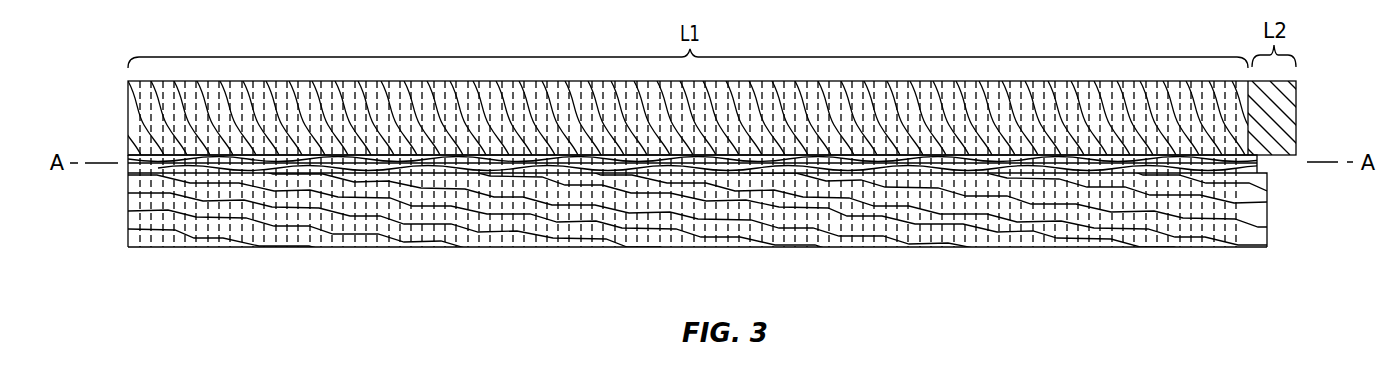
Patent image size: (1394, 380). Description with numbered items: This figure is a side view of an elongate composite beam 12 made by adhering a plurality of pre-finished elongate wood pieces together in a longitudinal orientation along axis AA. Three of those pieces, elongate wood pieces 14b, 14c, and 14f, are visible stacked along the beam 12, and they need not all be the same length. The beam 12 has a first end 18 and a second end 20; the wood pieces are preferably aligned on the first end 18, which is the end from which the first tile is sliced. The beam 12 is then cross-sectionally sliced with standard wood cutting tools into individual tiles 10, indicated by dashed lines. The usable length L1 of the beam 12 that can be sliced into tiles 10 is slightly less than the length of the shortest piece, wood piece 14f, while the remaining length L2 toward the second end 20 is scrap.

The tile 10 is at (990, 283).
The elongate composite beam 12 is at (210, 279).
The elongate wood piece 14b is at (1297, 113).
The elongate wood piece 14c is at (1268, 208).
The elongate wood piece 14f is at (1258, 161).
The first end 18 is at (110, 203).
The second end 20 is at (1312, 93).